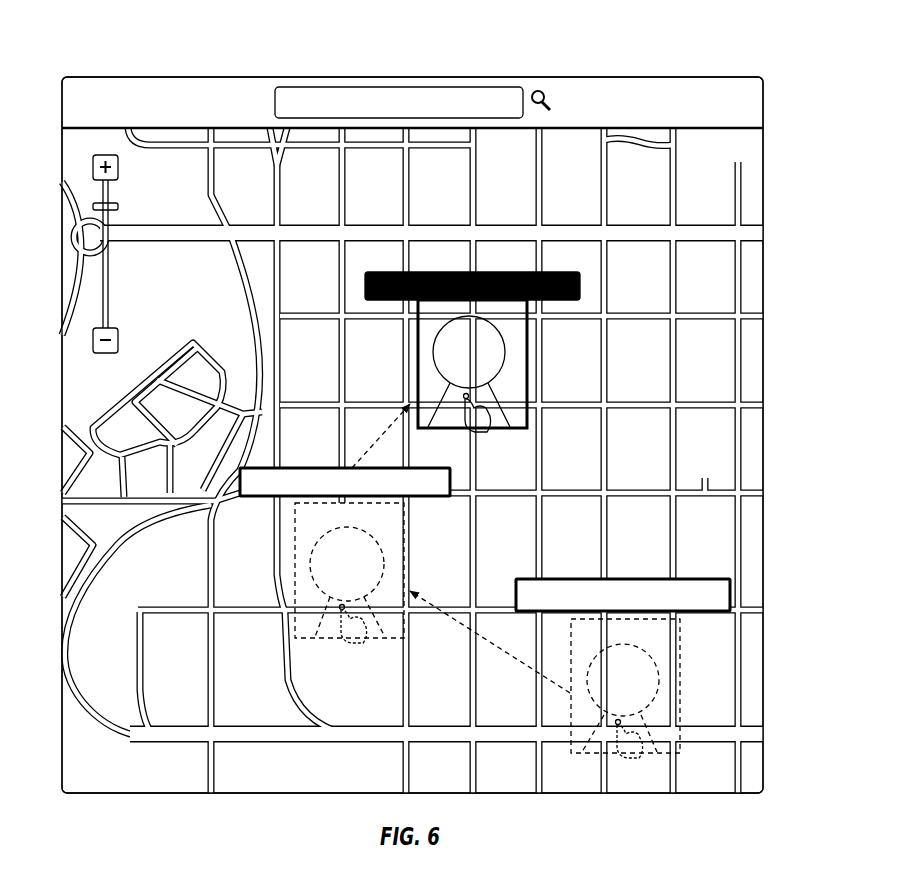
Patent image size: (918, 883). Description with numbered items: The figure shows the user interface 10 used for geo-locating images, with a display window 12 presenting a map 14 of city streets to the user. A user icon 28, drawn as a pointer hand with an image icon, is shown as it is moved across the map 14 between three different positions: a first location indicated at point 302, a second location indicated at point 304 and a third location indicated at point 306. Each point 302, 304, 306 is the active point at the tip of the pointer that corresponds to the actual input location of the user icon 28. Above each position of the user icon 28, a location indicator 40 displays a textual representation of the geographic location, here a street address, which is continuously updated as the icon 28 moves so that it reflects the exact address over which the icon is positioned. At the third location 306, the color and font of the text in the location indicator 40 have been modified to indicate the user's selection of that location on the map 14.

The user interface 10 is at (714, 48).
The display window 12 is at (766, 176).
The map 14 is at (240, 182).
The user icon 28 is at (534, 371).
The location indicator 40 is at (582, 290).
The first location point 302 is at (618, 725).
The second location point 304 is at (342, 610).
The third location point 306 is at (470, 398).